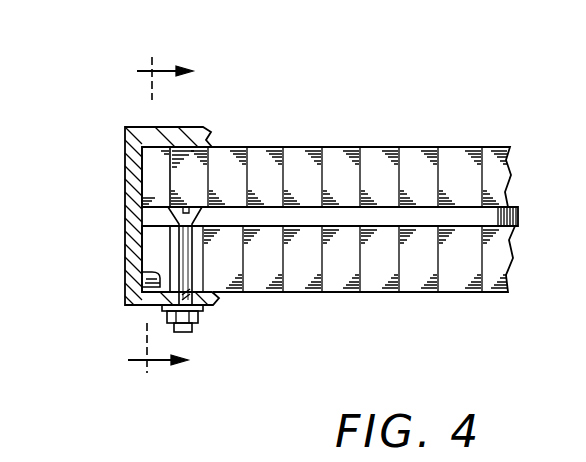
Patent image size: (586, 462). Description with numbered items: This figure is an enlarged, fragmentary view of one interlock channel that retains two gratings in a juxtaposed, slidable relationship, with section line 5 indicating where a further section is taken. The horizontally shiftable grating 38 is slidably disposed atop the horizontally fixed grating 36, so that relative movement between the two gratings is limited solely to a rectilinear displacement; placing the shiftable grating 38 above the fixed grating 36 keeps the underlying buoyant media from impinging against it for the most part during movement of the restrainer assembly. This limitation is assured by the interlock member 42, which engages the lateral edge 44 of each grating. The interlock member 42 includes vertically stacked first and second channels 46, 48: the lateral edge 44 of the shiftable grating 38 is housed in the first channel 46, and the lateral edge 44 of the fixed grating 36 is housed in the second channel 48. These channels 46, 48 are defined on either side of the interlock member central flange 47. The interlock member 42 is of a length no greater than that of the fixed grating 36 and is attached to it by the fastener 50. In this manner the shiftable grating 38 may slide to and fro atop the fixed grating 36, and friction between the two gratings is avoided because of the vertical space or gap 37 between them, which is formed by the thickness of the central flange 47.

The section line 5- 5 is at (150, 215).
The fixed grating 36 is at (502, 255).
The vertical space or gap 37 is at (348, 213).
The shiftable grating 38 is at (483, 172).
The interlock member 42 is at (137, 216).
The lateral edge 44 is at (148, 168).
The first channel 46 is at (183, 150).
The central flange 47 is at (209, 215).
The second channel 48 is at (145, 277).
The fastener 50 is at (203, 313).